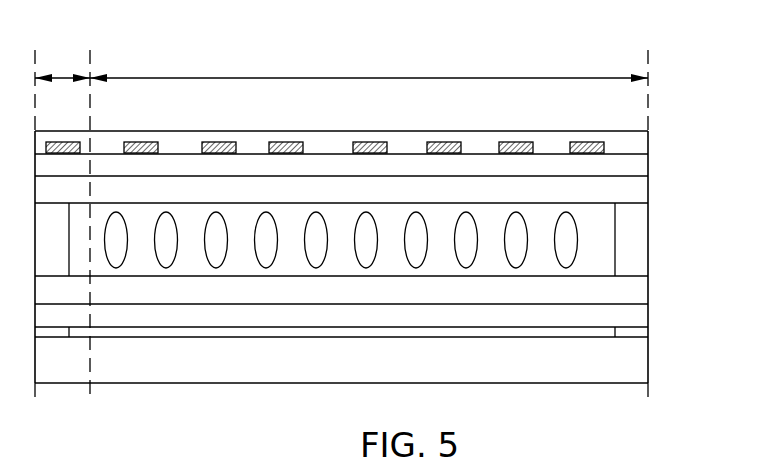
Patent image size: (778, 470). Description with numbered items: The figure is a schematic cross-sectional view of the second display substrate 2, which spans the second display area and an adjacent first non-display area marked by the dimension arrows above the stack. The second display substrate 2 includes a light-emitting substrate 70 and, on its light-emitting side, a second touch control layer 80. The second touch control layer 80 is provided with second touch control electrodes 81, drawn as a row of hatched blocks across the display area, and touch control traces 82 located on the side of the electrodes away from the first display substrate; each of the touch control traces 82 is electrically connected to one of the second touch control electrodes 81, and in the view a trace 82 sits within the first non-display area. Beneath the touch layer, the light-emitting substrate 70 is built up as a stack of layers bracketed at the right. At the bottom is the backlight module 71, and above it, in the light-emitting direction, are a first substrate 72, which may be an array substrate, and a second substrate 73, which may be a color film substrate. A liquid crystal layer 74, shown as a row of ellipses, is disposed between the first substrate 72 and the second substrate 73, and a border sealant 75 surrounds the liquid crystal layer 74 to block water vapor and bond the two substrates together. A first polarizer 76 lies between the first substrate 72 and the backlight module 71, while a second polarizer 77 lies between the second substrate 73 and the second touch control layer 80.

The second display substrate 2 is at (142, 48).
The light-emitting substrate 70 is at (697, 167).
The backlight module 71 is at (633, 360).
The first substrate 72 is at (625, 287).
The second substrate 73 is at (632, 186).
The liquid crystal layer 74 is at (566, 250).
The border sealant 75 is at (622, 222).
The first polarizer 76 is at (625, 313).
The second polarizer 77 is at (630, 163).
The second touch control layer 80 is at (627, 143).
The second touch control electrodes 81 is at (510, 146).
The touch control traces 82 is at (60, 142).